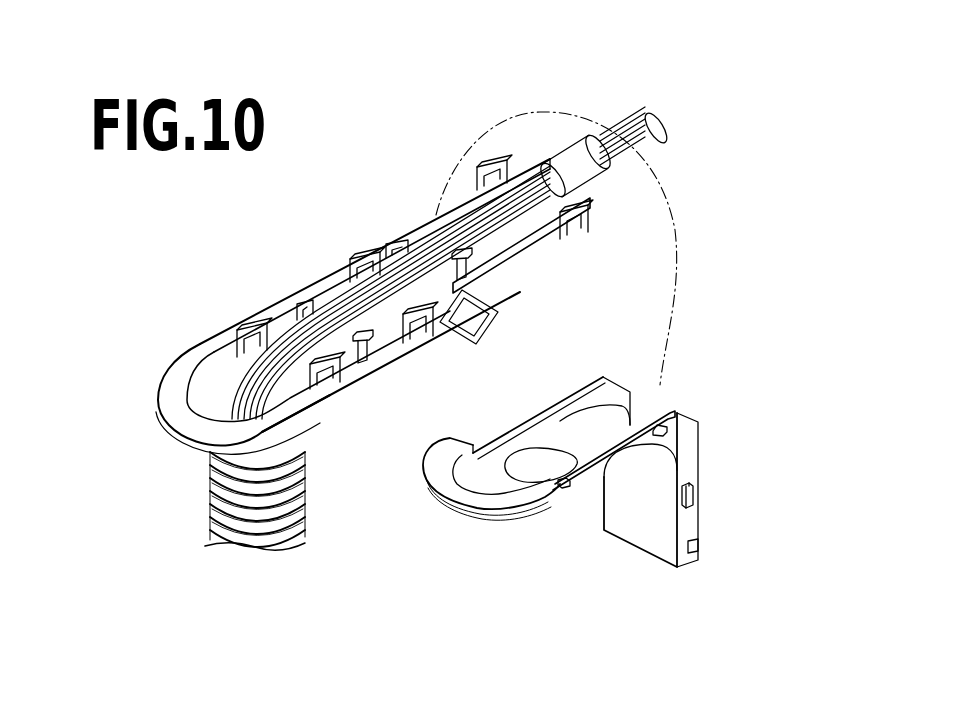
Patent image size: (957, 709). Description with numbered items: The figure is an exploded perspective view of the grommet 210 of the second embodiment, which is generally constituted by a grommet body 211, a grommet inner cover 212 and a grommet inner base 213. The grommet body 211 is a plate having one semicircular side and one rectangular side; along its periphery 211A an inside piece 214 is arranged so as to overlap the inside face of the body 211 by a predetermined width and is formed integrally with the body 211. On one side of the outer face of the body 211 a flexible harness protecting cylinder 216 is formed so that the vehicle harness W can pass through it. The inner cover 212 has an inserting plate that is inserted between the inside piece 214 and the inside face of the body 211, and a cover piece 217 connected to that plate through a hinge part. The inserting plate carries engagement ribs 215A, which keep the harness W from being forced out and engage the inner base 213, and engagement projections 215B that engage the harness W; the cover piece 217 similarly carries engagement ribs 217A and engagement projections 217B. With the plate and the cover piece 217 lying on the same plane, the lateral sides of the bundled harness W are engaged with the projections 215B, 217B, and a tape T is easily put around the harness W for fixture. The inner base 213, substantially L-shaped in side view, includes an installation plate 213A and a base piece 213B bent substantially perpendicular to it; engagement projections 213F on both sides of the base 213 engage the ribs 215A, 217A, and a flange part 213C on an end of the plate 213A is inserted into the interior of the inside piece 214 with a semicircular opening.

The grommet 210 is at (277, 290).
The grommet body 211 is at (160, 428).
The periphery 211A is at (163, 390).
The grommet inner cover 212 is at (497, 280).
The grommet inner base 213 is at (700, 440).
The installation plate 213A is at (585, 485).
The base piece 213B is at (660, 527).
The flange part 213C is at (490, 508).
The engagement projections 213F is at (673, 417).
The inside piece 214 is at (300, 415).
The engagement ribs 215A is at (435, 335).
The engagement projections 215B is at (445, 340).
The flexible harness protecting cylinder 216 is at (207, 517).
The cover piece 217 is at (477, 264).
The engagement ribs 217A is at (630, 226).
The engagement projections 217B is at (398, 238).
The tape T is at (562, 155).
The vehicle harness W is at (627, 115).